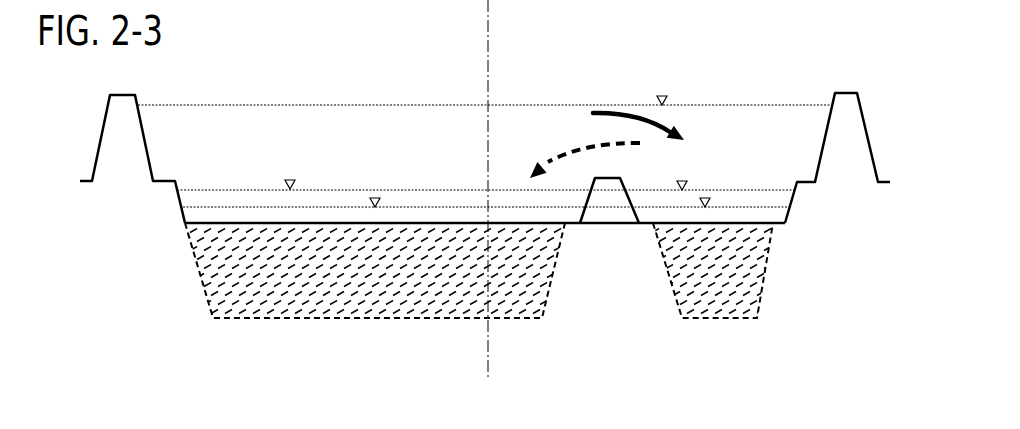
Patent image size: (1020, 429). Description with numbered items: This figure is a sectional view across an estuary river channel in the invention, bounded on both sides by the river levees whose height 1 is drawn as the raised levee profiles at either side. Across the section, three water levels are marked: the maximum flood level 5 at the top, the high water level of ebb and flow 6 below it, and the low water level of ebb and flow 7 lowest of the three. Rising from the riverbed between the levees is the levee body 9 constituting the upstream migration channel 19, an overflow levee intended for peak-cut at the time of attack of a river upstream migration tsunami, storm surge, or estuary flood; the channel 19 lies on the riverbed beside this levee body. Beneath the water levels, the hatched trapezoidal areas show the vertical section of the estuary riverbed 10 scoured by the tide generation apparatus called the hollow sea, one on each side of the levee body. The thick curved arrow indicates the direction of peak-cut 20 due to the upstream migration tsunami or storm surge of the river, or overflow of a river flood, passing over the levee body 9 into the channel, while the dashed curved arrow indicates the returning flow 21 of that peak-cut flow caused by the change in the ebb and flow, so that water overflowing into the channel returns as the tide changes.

The height of river levee 1 is at (847, 92).
The maximum flood level 5 is at (583, 104).
The high water level of ebb and flow 6 is at (307, 188).
The low water level of ebb and flow 7 is at (408, 207).
The levee body constituting upstream migration channel 9 is at (664, 122).
The vertical section of estuary riverbed scoured by tide generation apparatus 10 is at (380, 295).
The upstream migration channel 19 is at (728, 218).
The direction of peak-cut 20 is at (612, 198).
The returning flow 21 is at (558, 152).